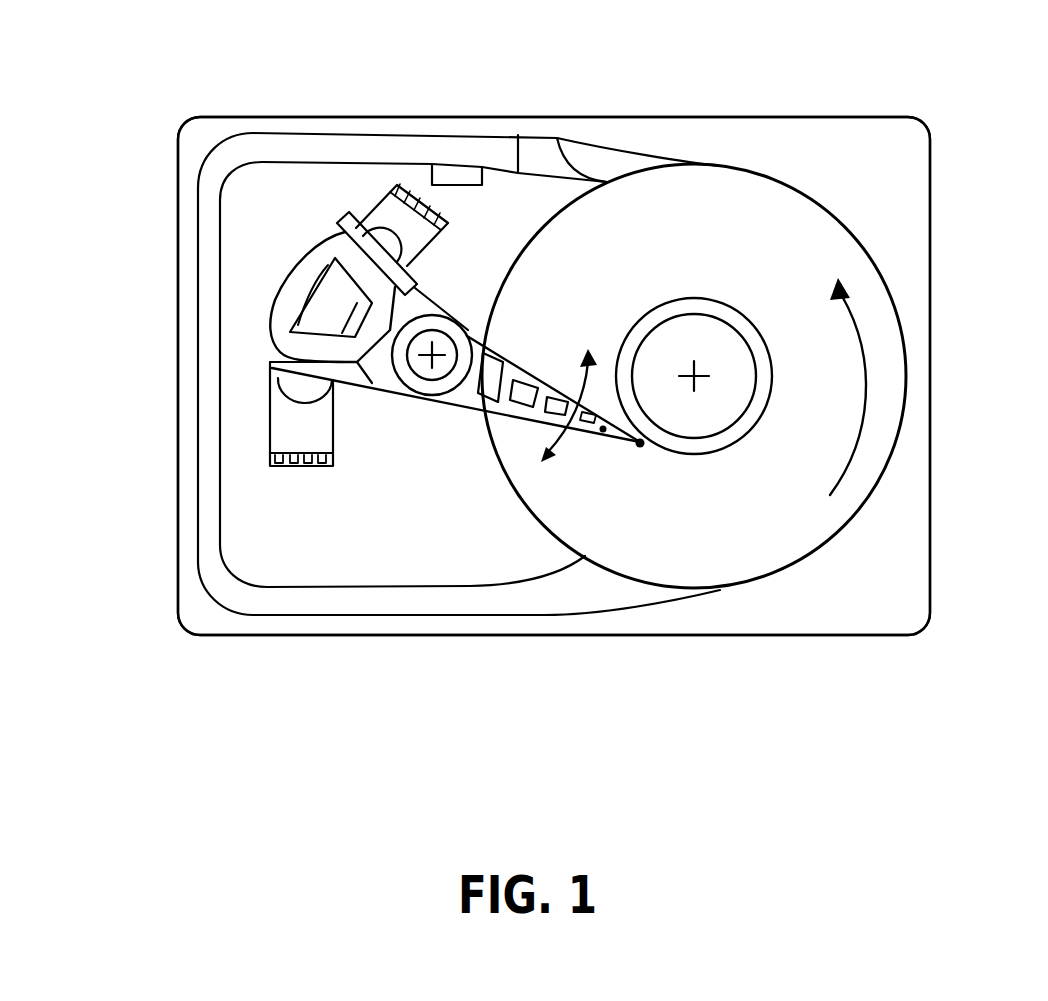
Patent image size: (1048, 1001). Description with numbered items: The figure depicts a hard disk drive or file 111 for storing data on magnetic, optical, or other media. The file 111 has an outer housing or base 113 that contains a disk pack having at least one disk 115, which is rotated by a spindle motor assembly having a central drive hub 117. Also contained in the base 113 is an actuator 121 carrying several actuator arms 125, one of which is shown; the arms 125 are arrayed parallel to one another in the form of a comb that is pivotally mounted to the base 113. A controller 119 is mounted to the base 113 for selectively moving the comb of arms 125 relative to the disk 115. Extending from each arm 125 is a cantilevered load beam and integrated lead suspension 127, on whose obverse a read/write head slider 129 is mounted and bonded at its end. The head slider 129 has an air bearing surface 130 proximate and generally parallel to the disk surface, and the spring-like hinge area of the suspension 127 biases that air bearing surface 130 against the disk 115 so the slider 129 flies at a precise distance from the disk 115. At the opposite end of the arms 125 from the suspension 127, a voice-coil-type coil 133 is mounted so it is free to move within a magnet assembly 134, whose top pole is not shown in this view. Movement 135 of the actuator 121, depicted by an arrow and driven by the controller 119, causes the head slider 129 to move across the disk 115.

The hard disk drive 111 is at (881, 104).
The outer housing or base 113 is at (380, 117).
The disk 115 is at (786, 212).
The central drive hub 117 is at (682, 338).
The controller 119 is at (463, 186).
The actuator 121 is at (405, 408).
The actuator arms 125 is at (530, 362).
The integrated lead suspension 127 is at (603, 432).
The read/write head slider 129 is at (647, 453).
The air bearing surface 130 is at (650, 447).
The coil 133 is at (303, 242).
The magnet assembly 134 is at (390, 208).
The movement of the actuator 135 is at (600, 352).